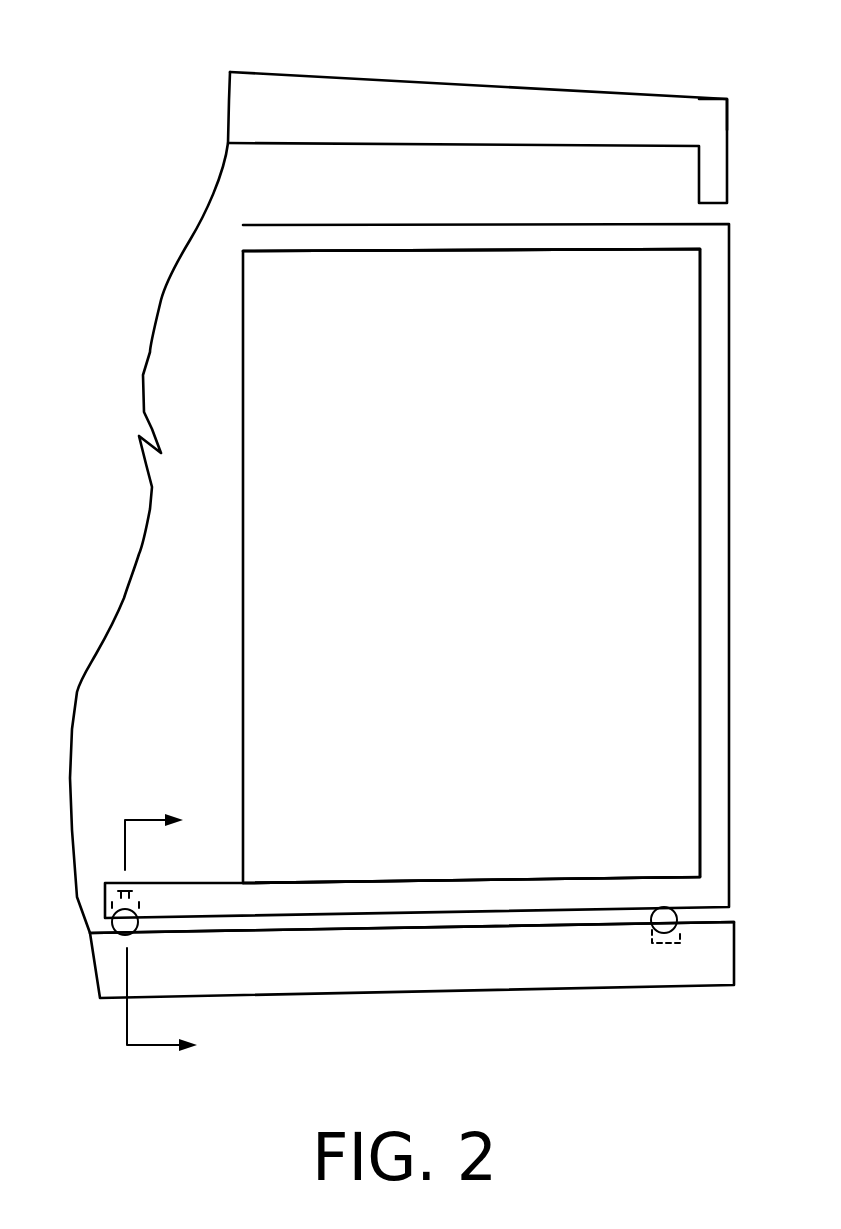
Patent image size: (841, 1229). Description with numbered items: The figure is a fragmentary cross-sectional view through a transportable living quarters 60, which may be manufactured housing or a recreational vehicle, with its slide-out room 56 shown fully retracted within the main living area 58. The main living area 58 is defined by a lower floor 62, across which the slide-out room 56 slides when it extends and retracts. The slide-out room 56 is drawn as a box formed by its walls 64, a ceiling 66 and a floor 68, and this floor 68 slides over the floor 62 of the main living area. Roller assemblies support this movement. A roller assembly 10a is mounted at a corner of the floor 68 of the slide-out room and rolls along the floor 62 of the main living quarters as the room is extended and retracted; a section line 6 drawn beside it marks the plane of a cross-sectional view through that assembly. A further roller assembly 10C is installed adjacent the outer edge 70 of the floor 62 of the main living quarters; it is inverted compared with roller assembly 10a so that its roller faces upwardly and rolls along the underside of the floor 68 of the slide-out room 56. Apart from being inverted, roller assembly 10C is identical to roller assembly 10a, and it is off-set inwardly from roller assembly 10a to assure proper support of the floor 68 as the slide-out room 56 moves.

The section line 6- 6 is at (174, 933).
The roller assembly 10a is at (115, 940).
The roller assembly 10C is at (636, 942).
The slide-out room 56 is at (737, 519).
The living area 58 is at (518, 200).
The transportable living quarters 60 is at (731, 96).
The lower floor 62 is at (480, 923).
The walls 64 is at (468, 498).
The ceiling 66 is at (440, 242).
The floor 68 is at (450, 888).
The outer edge 70 is at (738, 943).